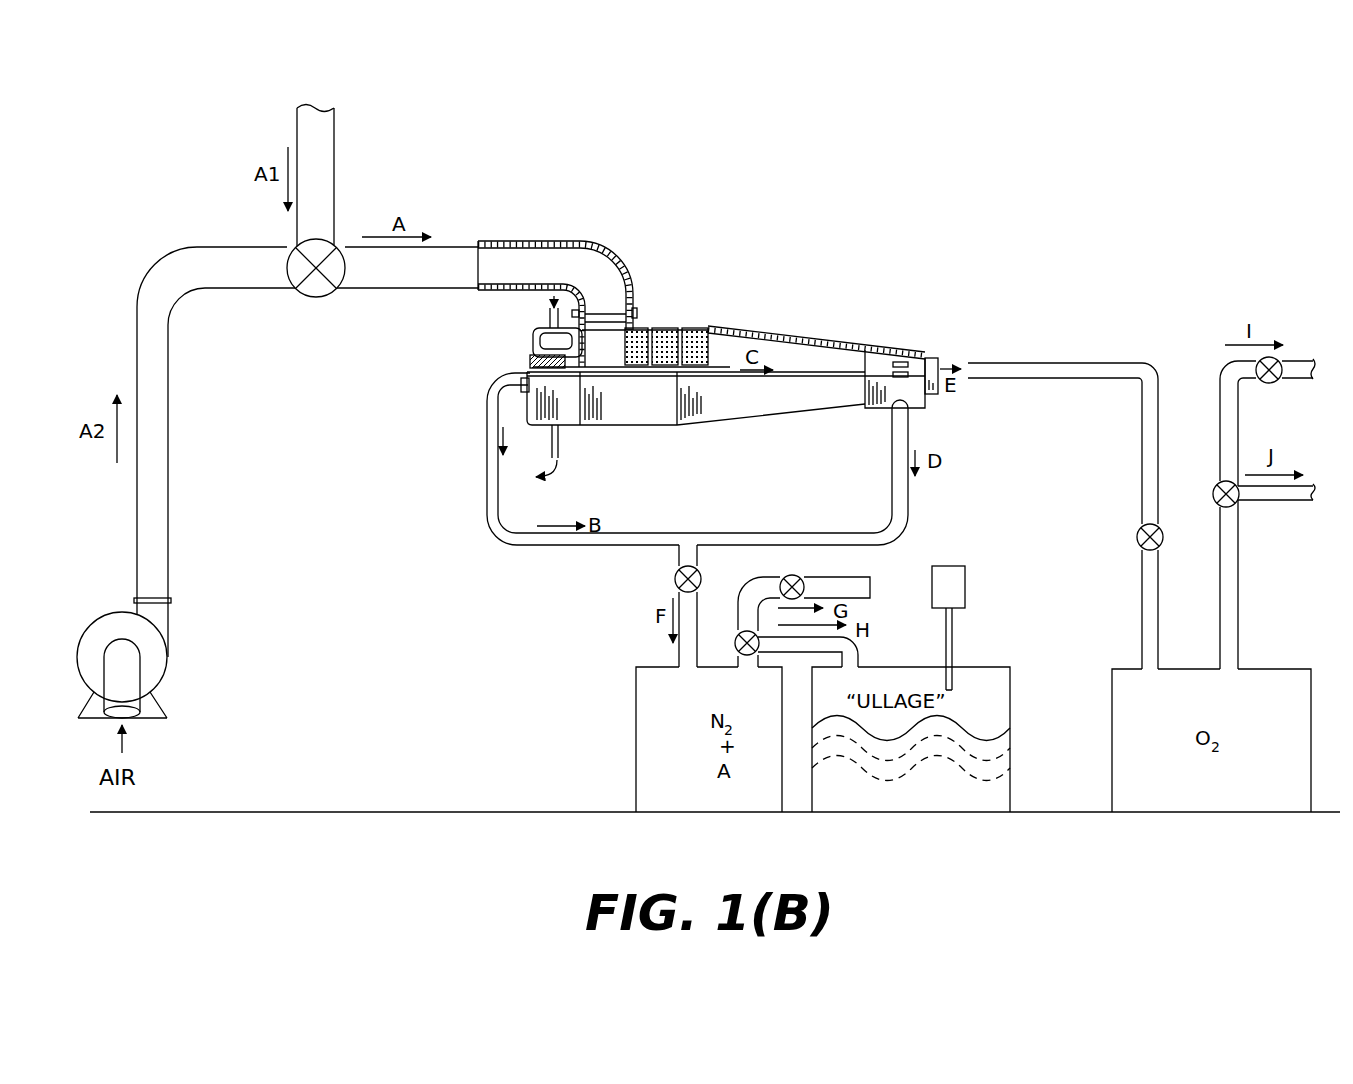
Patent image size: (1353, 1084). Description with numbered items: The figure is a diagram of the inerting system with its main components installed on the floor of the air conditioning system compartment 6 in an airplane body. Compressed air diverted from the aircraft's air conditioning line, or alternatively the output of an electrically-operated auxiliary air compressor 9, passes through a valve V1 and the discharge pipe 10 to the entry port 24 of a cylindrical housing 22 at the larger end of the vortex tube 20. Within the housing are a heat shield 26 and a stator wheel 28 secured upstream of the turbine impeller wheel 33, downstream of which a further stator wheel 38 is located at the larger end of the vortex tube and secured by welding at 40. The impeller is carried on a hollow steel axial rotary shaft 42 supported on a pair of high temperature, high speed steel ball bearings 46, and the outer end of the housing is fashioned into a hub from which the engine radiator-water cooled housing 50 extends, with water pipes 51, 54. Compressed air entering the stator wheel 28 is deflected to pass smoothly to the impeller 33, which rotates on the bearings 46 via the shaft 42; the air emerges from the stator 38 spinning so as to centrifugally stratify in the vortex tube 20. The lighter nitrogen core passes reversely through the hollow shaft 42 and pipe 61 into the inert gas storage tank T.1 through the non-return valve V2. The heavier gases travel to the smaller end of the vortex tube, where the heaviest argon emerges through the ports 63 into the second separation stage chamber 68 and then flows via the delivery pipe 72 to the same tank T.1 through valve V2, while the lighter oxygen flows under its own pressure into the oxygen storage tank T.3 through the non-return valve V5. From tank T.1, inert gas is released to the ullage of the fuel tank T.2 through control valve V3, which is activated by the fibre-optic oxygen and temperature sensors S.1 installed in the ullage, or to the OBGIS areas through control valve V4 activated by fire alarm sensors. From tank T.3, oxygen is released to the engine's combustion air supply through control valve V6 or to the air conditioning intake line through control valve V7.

The Air Conditioning System compartment floor 6 is at (456, 811).
The discharge pipe 10 is at (206, 246).
The Auxiliary Air Compressor 9 is at (168, 612).
The water pipe 51 is at (548, 297).
The radiator-water cooled Housing 50 is at (532, 336).
The ball bearings 46 is at (528, 362).
The entry port 24 is at (594, 312).
The cylindrical housing 22 is at (638, 328).
The stator wheel 28 is at (657, 330).
The weld 40 is at (691, 328).
The further stator wheel 38 is at (709, 328).
The vortex tube 20 is at (780, 333).
The hollow steel axial rotary shaft 42 is at (598, 364).
The turbine impeller wheel 33 is at (677, 381).
The heat shield 26 is at (596, 376).
The water pipe 54 is at (528, 475).
The Second Separation Stage chamber 68 is at (886, 350).
The ports 63 is at (906, 352).
The pipe 61 is at (487, 494).
The delivery pipe 72 is at (890, 426).
The valve V1 is at (316, 290).
The non-return valve V2 is at (665, 606).
The control valve V3 is at (787, 622).
The control valve V4 is at (804, 578).
The non-return valve V5 is at (1065, 516).
The control valve V6 is at (1244, 514).
The control valve V7 is at (1268, 391).
The Inert gas storage Tank T.1 is at (655, 703).
The Fuel Tank T.2 is at (1010, 694).
The Oxygen storage Tank T.3 is at (1112, 764).
The Fibre-optic Oxygen and Temperature Sensors S.1 is at (966, 580).